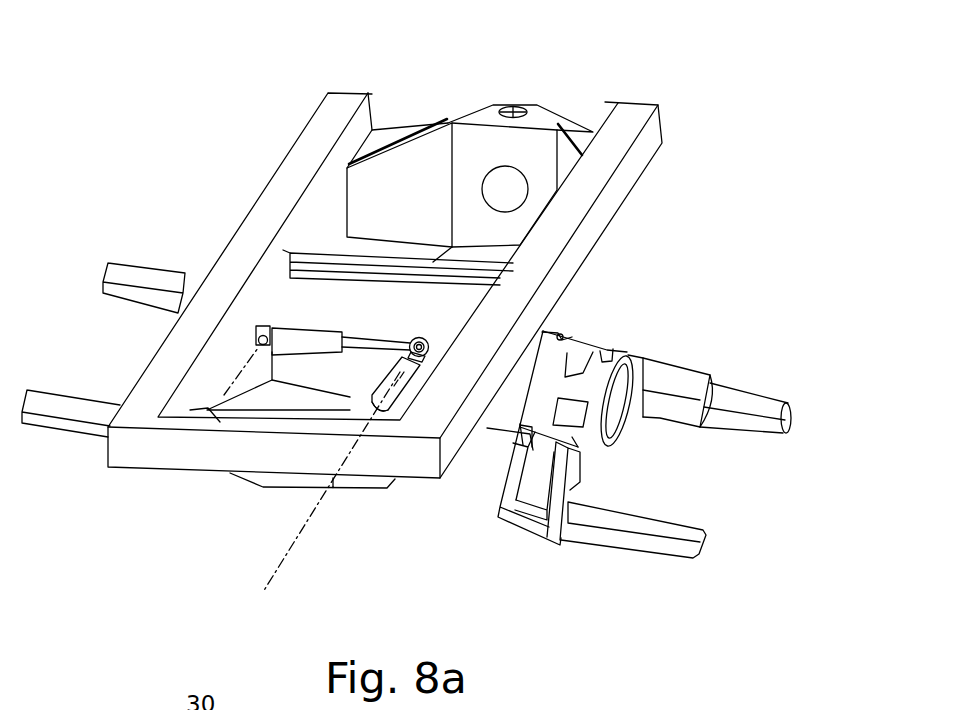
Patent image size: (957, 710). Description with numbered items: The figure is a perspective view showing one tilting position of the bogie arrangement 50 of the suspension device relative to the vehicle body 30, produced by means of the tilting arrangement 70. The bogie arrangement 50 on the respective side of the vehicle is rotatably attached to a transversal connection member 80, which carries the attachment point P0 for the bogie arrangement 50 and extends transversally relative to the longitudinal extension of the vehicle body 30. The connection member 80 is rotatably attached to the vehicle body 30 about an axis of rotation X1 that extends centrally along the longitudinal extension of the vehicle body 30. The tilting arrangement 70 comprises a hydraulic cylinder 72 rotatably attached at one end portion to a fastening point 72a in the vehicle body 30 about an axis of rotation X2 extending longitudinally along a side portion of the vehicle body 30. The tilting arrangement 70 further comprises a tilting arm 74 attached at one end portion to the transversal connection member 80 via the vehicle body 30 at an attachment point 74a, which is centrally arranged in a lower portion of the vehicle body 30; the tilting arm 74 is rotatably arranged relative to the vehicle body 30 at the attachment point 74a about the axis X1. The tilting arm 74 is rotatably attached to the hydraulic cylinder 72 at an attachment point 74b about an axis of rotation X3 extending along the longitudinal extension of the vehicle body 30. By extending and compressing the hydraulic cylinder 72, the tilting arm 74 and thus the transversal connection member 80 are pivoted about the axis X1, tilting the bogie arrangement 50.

The vehicle body 30 is at (330, 88).
The tilting arrangement 70 is at (385, 320).
The hydraulic cylinder 72 is at (335, 322).
The fastening point 72a is at (254, 340).
The axis of rotation X2 is at (233, 377).
The axis of rotation X3 is at (380, 370).
The tilting arm 74 is at (380, 370).
The attachment point 74a is at (384, 413).
The attachment point 74b is at (425, 364).
The axis of rotation X1 is at (307, 518).
The transversal connection member 80 is at (482, 433).
The attachment point P0 is at (566, 346).
The bogie arrangement 50 is at (648, 345).